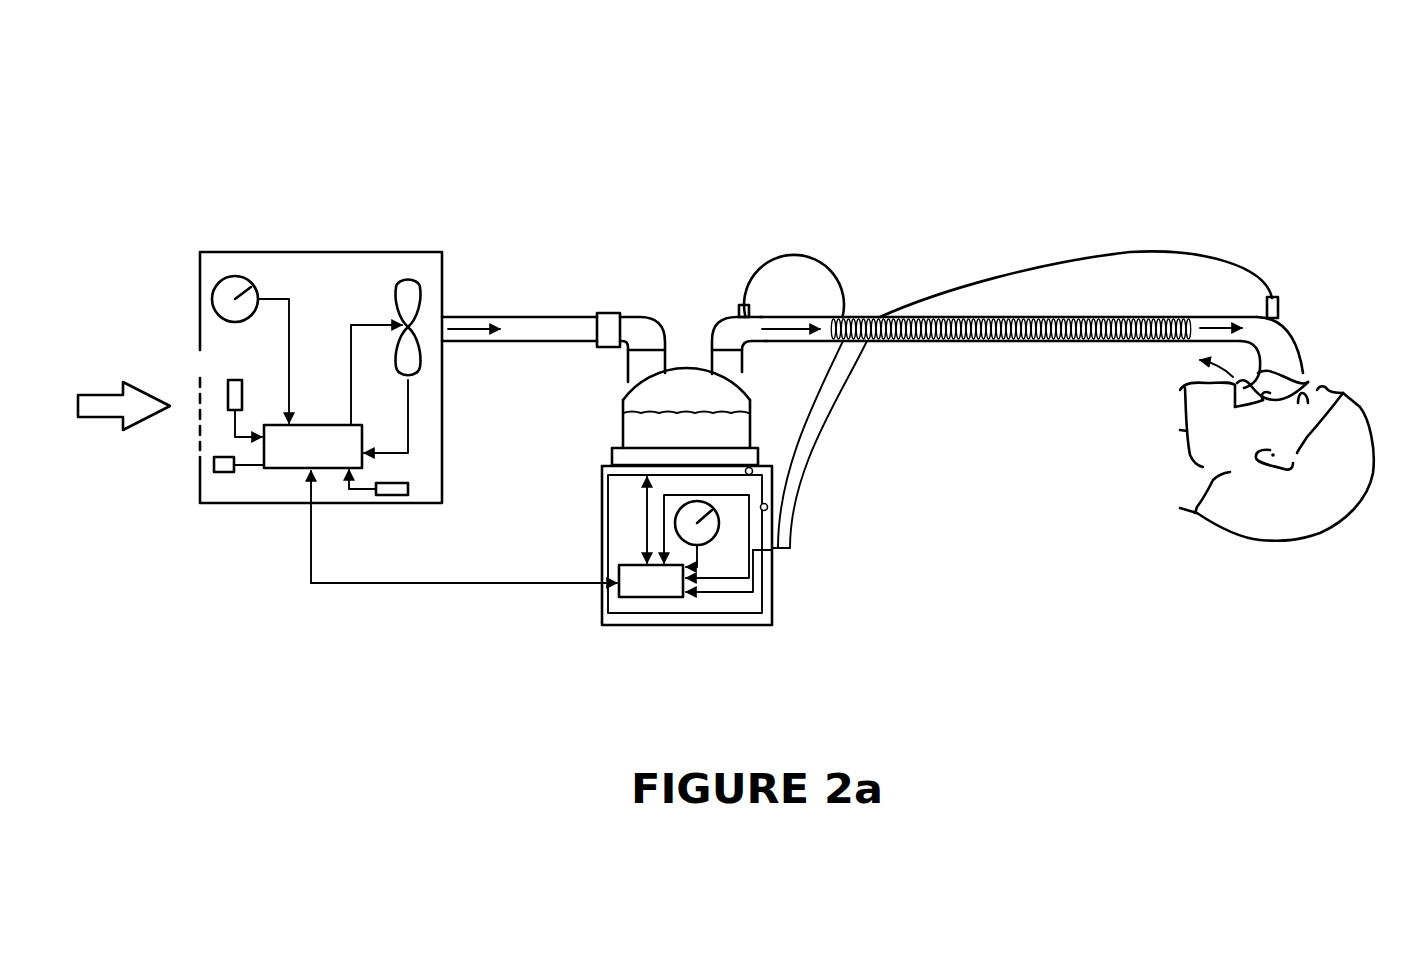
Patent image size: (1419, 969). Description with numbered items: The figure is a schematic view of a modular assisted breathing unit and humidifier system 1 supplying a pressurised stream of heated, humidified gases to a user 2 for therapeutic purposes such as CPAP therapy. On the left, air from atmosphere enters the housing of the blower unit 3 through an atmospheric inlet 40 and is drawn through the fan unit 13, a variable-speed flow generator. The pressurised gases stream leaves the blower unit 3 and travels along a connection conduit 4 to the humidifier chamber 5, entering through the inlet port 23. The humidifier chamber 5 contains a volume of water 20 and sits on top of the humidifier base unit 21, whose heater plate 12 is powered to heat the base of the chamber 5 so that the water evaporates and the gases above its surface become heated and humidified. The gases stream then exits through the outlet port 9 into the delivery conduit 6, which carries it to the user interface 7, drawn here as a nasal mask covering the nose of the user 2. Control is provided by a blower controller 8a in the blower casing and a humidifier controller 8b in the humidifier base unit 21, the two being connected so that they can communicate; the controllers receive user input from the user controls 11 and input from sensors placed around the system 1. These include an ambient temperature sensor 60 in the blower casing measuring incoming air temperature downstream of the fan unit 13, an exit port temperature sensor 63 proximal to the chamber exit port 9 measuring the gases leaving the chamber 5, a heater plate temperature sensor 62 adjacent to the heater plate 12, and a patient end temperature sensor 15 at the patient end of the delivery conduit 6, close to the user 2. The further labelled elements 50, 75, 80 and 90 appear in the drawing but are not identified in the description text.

The breathing assistance system 1 is at (614, 158).
The user 2 is at (1213, 520).
The blower unit 3 is at (332, 252).
The connection conduit 4 is at (540, 317).
The humidifier chamber 5 is at (623, 400).
The delivery conduit 6 is at (1020, 343).
The user interface 7 is at (1308, 374).
The blower controller 8a is at (302, 470).
The humidifier controller 8b is at (650, 598).
The outlet port 9 is at (713, 350).
The user controls 11 is at (237, 276).
The heater plate 12 is at (612, 452).
The fan unit 13 is at (412, 274).
The patient end temperature sensor 15 is at (1279, 300).
The volume of water 20 is at (628, 434).
The humidifier base unit 21 is at (602, 533).
The inlet port 23 is at (628, 371).
The atmospheric inlet 40 is at (202, 446).
The ambient sensor 50 is at (228, 386).
The ambient temperature sensor 60 is at (400, 496).
The heater plate temperature sensor 62 is at (753, 470).
The exit port temperature sensor 63 is at (744, 305).
The heater wire 75 is at (886, 318).
The humidity sensor 80 is at (213, 471).
The sensor 90 is at (768, 507).